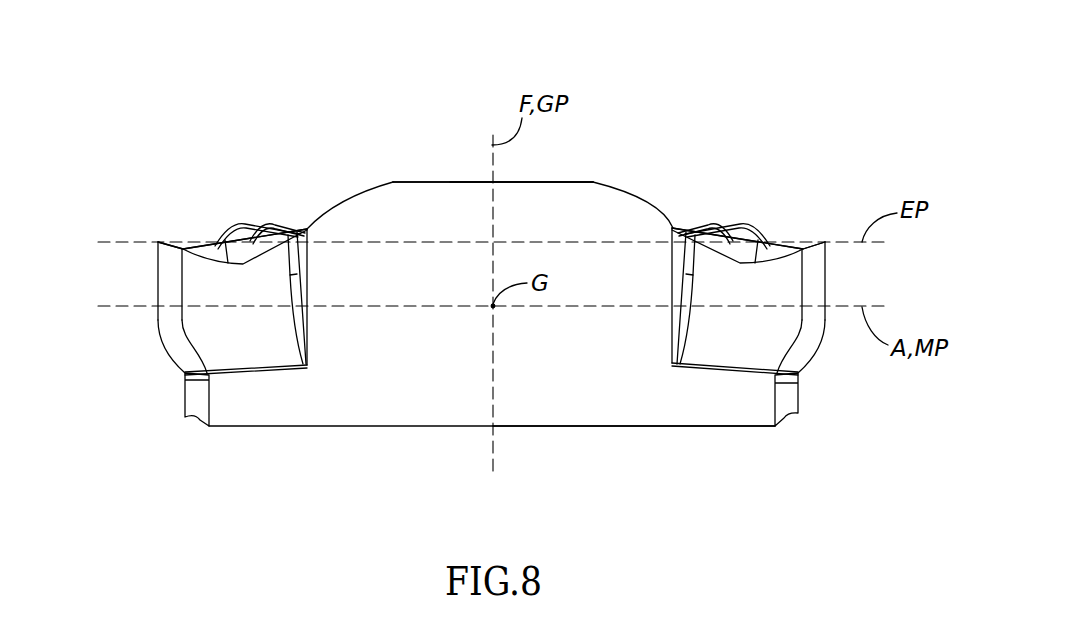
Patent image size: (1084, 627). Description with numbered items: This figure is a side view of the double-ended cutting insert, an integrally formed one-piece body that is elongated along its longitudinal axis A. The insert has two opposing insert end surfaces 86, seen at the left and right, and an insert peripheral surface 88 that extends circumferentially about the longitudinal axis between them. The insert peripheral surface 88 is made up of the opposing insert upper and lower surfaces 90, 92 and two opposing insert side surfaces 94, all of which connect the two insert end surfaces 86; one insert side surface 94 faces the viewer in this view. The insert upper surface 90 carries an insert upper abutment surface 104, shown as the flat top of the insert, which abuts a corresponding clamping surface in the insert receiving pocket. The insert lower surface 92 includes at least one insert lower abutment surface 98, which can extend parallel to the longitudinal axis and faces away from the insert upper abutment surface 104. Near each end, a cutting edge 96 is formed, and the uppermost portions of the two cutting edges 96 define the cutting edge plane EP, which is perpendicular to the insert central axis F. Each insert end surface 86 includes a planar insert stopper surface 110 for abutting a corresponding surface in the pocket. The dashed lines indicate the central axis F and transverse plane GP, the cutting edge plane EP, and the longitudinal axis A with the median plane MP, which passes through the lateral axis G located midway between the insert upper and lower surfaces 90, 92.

The insert upper surface 90 is at (438, 172).
The insert upper abutment surface 104 is at (535, 182).
The cutting edge 96 is at (158, 242).
The insert stopper surface 110 is at (158, 269).
The insert end surface 86 is at (173, 347).
The insert side surface 94 is at (353, 390).
The insert peripheral surface 88 is at (607, 390).
The insert lower surface 92 is at (419, 442).
The insert lower abutment surface 98 is at (577, 427).